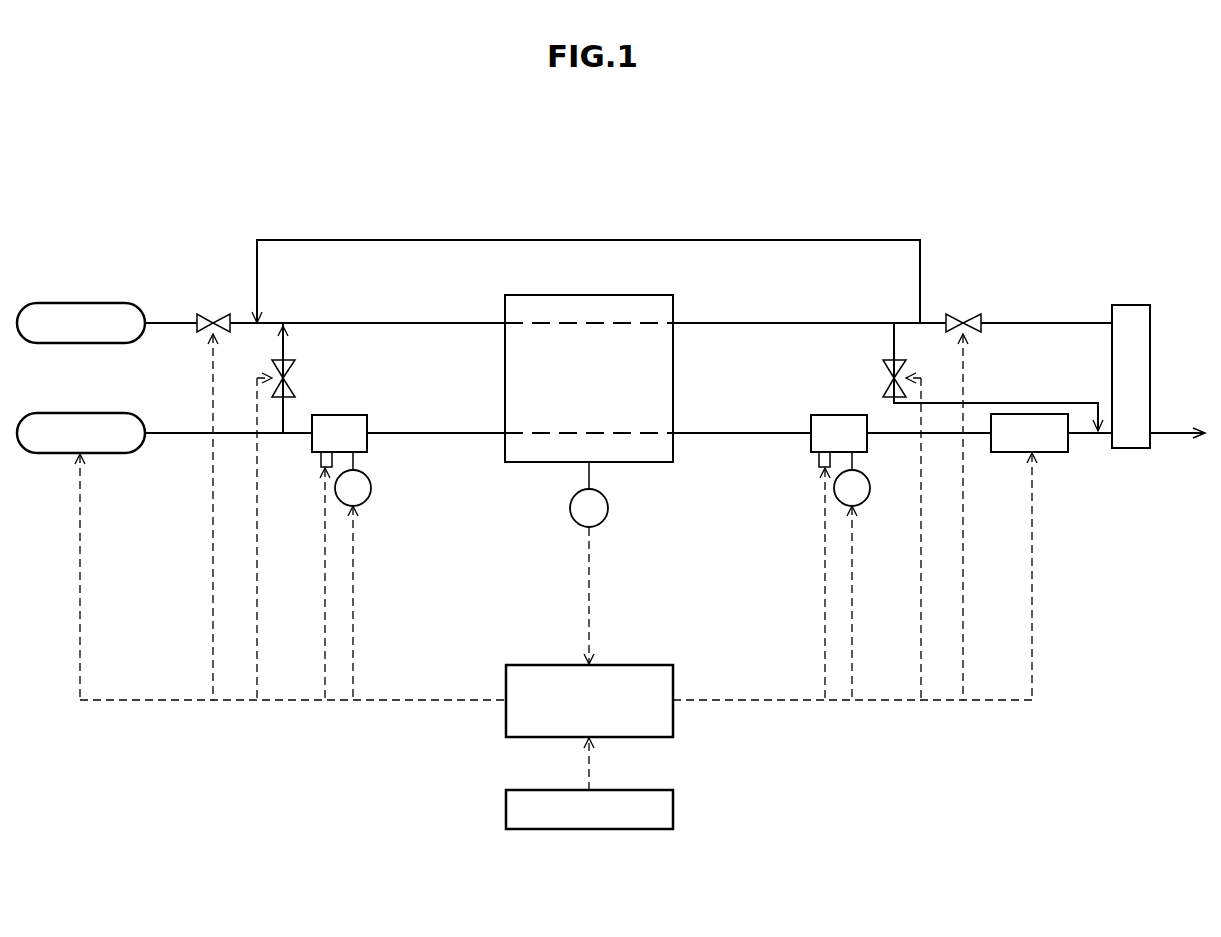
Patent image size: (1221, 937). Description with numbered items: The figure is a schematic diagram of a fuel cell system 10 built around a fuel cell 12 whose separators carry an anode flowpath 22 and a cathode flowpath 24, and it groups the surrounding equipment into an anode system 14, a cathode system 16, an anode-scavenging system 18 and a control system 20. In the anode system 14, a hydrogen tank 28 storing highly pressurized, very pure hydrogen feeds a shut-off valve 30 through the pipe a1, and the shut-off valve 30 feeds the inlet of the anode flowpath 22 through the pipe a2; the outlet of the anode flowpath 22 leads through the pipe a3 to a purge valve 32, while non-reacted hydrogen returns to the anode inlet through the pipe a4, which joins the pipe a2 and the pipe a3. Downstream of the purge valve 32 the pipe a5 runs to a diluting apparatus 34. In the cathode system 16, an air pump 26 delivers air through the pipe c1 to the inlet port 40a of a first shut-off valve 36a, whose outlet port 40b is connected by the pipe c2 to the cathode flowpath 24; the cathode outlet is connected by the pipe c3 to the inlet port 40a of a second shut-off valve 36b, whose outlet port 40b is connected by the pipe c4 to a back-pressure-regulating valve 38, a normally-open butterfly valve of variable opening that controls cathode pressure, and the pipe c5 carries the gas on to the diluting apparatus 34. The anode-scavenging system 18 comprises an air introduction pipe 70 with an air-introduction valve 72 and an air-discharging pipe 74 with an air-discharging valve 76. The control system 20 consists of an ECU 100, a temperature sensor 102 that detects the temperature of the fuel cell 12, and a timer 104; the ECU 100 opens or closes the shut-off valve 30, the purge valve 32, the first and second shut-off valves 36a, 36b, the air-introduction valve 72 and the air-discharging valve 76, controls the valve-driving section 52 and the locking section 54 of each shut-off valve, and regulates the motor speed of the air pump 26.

The fuel cell system 10 is at (727, 172).
The fuel cell 12 is at (566, 292).
The anode system 14 is at (195, 253).
The cathode system 16 is at (181, 516).
The anode-scavenging system 18 is at (284, 455).
The control system 20 is at (447, 788).
The anode flowpath 22 is at (578, 326).
The cathode flowpath 24 is at (600, 431).
The air pump 26 is at (81, 433).
The hydrogen tank 28 is at (81, 323).
The shut-off valve 30 is at (221, 317).
The purge valve 32 is at (975, 318).
The diluting apparatus 34 is at (1131, 376).
The first shut-off valve 36a is at (342, 415).
The second shut-off valve 36b is at (841, 415).
The back-pressure-regulating valve 38 is at (1029, 433).
The inlet port 40a is at (303, 430).
The outlet port 40b is at (368, 436).
The valve-driving section 52 is at (371, 492).
The locking section 54 is at (320, 468).
The air introduction pipe 70 is at (282, 346).
The air-introduction valve 72 is at (290, 345).
The air-discharging pipe 74 is at (894, 340).
The air-discharging valve 76 is at (897, 358).
The ECU 100 is at (556, 562).
The temperature sensor 102 is at (609, 506).
The timer 104 is at (589, 809).
The pipe a1 is at (171, 319).
The pipe a2 is at (339, 321).
The pipe a3 is at (830, 321).
The pipe a4 is at (835, 238).
The pipe a5 is at (1053, 321).
The pipe c1 is at (175, 435).
The pipe c2 is at (477, 431).
The pipe c3 is at (684, 435).
The pipe c4 is at (976, 437).
The pipe c5 is at (1081, 437).